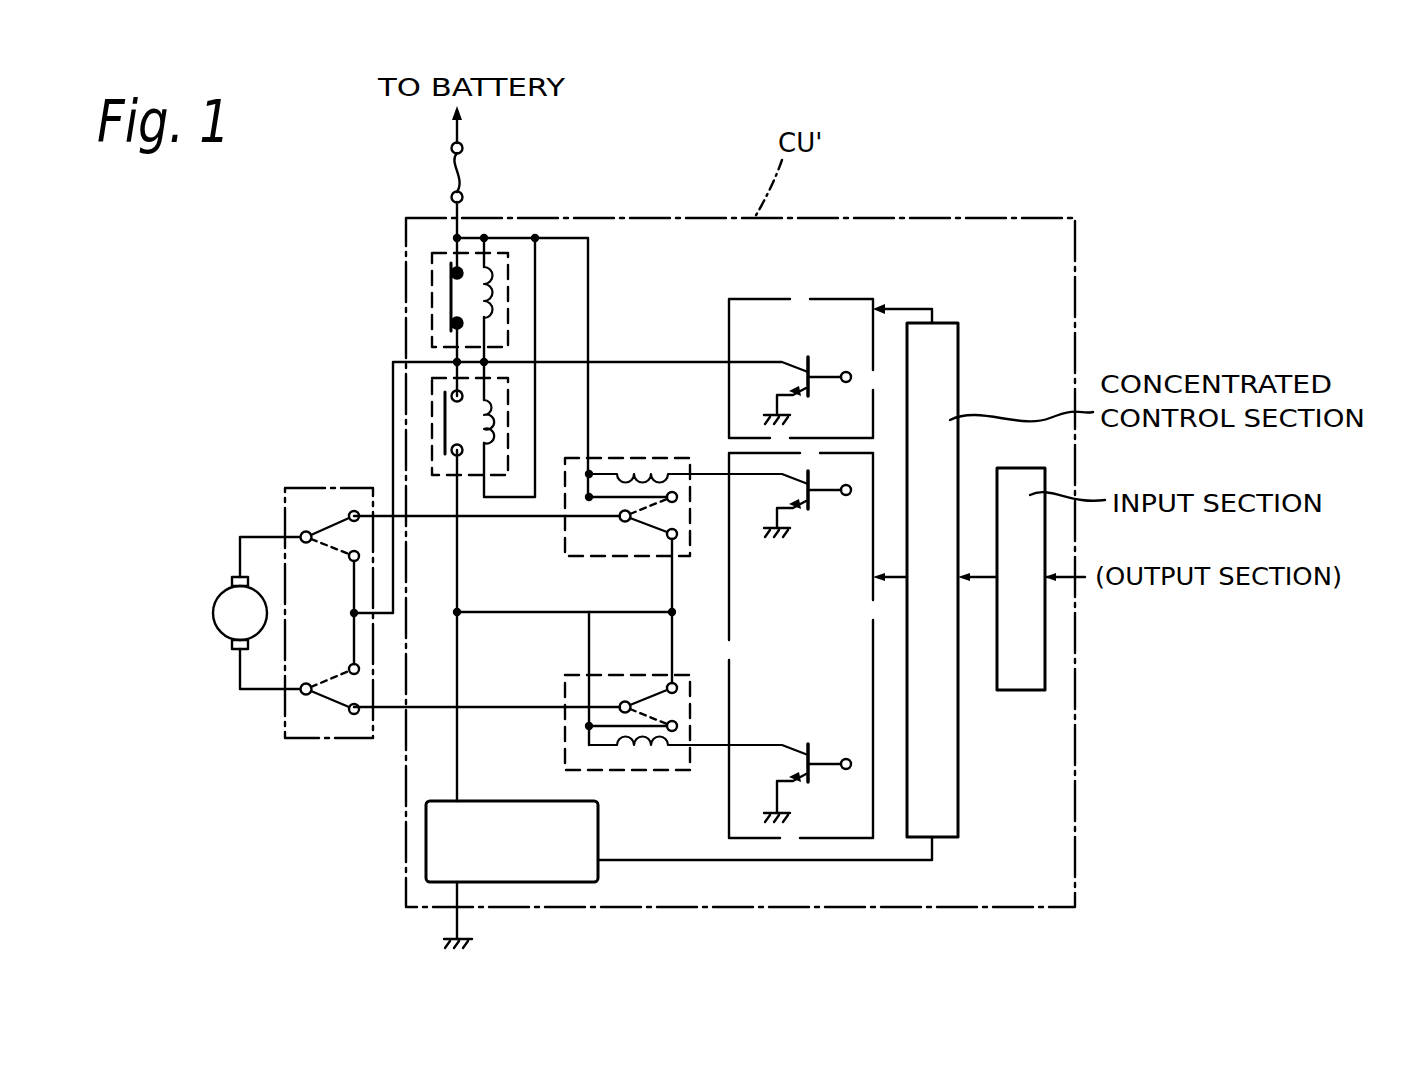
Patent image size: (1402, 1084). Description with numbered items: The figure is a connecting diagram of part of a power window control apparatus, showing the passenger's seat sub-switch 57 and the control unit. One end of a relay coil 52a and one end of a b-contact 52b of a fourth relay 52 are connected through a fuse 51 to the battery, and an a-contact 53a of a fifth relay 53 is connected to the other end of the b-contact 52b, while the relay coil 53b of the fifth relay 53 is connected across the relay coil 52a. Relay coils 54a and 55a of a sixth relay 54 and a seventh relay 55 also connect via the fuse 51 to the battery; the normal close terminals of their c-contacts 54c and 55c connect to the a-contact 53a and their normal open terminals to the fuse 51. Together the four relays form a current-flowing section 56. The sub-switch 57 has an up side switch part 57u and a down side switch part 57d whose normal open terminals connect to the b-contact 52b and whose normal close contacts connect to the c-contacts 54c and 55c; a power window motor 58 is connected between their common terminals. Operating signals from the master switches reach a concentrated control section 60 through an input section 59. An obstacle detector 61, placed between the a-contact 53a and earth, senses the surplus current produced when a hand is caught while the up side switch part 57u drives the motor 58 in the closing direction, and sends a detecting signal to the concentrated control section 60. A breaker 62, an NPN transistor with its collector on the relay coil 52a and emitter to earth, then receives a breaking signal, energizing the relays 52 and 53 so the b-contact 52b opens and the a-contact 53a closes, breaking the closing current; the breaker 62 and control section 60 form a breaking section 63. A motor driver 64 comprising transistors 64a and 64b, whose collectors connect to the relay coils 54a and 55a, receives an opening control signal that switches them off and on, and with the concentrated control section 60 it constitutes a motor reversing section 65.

The fuse 51 is at (470, 180).
The fourth relay 52 is at (432, 282).
The relay coil 52a is at (497, 292).
The b-contact 52b is at (451, 296).
The fifth relay 53 is at (432, 402).
The a-contact 53a is at (445, 428).
The relay coil 53b is at (490, 416).
The sixth relay 54 is at (565, 540).
The relay coil 54a is at (636, 466).
The c-contact 54c is at (646, 540).
The seventh relay 55 is at (565, 700).
The relay coil 55a is at (640, 752).
The c-contact 55c is at (643, 690).
The current-flowing section 56 is at (650, 345).
The passenger's seat sub-switch 57 is at (290, 740).
The up side switch part 57u is at (330, 520).
The down side switch part 57d is at (330, 712).
The power window motor 58 is at (218, 597).
The input section 59 is at (1016, 690).
The concentrated control section 60 is at (960, 395).
The obstacle detector 61 is at (598, 823).
The breaker 62 is at (765, 298).
The breaking section 63 is at (890, 287).
The motor driver 64 is at (820, 838).
The transistor 64a is at (818, 545).
The transistor 64b is at (788, 742).
The motor reversing section 65 is at (895, 838).